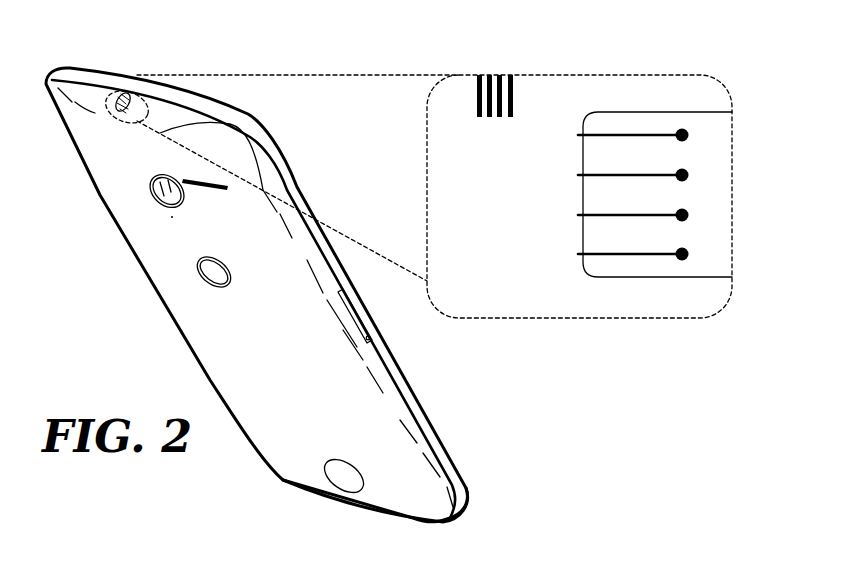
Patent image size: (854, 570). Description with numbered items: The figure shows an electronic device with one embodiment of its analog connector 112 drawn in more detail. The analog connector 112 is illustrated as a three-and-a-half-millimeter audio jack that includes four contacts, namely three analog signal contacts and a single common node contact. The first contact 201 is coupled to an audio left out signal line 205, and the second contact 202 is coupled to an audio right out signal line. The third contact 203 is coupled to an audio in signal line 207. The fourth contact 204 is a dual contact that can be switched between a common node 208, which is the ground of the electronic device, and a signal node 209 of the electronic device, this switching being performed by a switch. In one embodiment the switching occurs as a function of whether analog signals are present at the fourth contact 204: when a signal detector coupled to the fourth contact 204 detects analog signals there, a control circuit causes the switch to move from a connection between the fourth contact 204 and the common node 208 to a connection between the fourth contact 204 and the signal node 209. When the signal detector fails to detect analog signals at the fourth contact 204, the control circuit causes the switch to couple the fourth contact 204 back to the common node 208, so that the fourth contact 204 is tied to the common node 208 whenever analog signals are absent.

The analog connector 112 is at (128, 90).
The first contact 201 is at (689, 135).
The second contact 202 is at (689, 175).
The third contact 203 is at (689, 215).
The fourth contact 204 is at (689, 254).
The audio left out signal line 205 is at (445, 138).
The audio in signal line 207 is at (500, 214).
The common node 208 is at (540, 265).
The signal node 209 is at (447, 246).